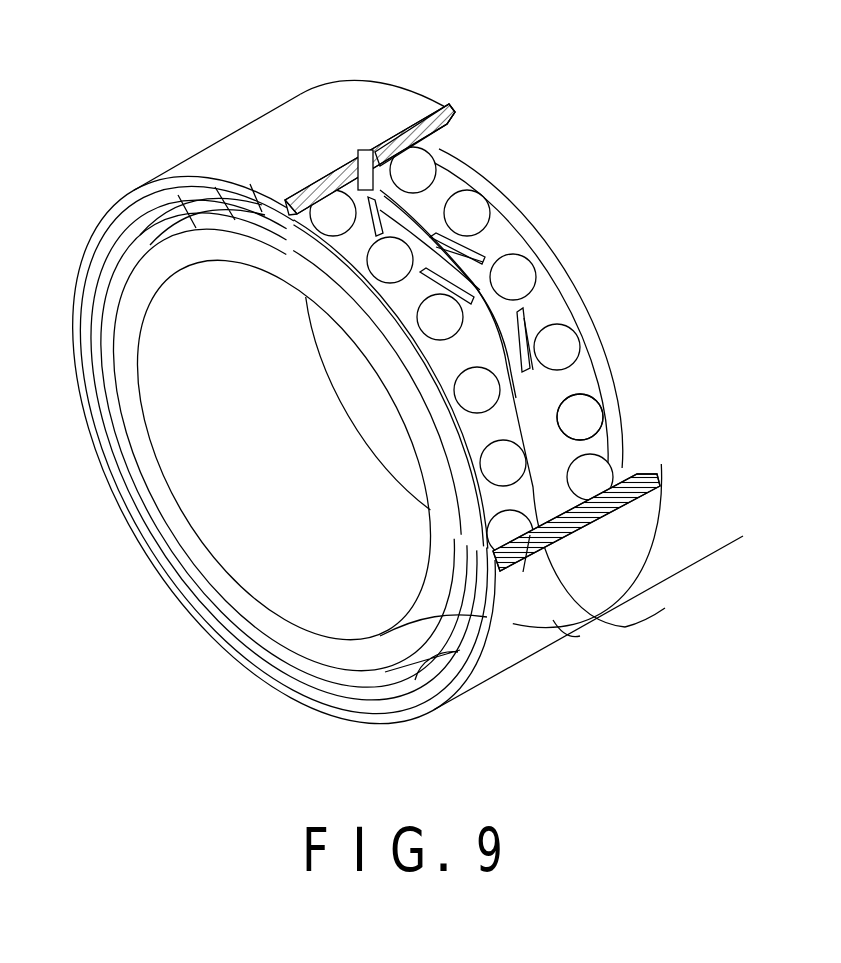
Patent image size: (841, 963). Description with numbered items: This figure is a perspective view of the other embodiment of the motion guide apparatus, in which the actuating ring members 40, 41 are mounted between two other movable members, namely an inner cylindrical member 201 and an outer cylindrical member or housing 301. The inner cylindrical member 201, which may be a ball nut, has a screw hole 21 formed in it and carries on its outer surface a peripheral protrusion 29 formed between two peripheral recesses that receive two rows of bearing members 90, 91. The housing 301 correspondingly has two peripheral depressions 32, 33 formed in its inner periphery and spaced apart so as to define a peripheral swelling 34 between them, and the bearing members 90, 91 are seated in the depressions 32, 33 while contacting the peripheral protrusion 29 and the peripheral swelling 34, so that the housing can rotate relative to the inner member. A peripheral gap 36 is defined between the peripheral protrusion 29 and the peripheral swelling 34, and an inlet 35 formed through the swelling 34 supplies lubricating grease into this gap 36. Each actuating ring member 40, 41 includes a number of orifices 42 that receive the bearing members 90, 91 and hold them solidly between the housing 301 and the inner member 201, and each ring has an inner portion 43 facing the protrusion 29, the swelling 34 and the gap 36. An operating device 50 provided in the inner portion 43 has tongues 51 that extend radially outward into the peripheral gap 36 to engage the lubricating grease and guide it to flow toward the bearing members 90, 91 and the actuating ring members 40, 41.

The screw hole 21 is at (248, 523).
The inner cylindrical member 201 is at (265, 625).
The peripheral protrusion 29 is at (527, 395).
The peripheral depression 32 is at (340, 173).
The peripheral depression 33 is at (423, 100).
The peripheral swelling 34 is at (573, 625).
The inlet 35 is at (360, 150).
The peripheral gap 36 is at (534, 487).
The actuating ring member 40 is at (483, 433).
The actuating ring member 41 is at (575, 383).
The orifice 42 is at (468, 205).
The inner portion 43 is at (640, 595).
The operating device 50 is at (486, 240).
The tongue 51 is at (526, 345).
The bearing member 90 is at (493, 475).
The bearing member 91 is at (588, 423).
The outer cylindrical member 301 is at (553, 620).